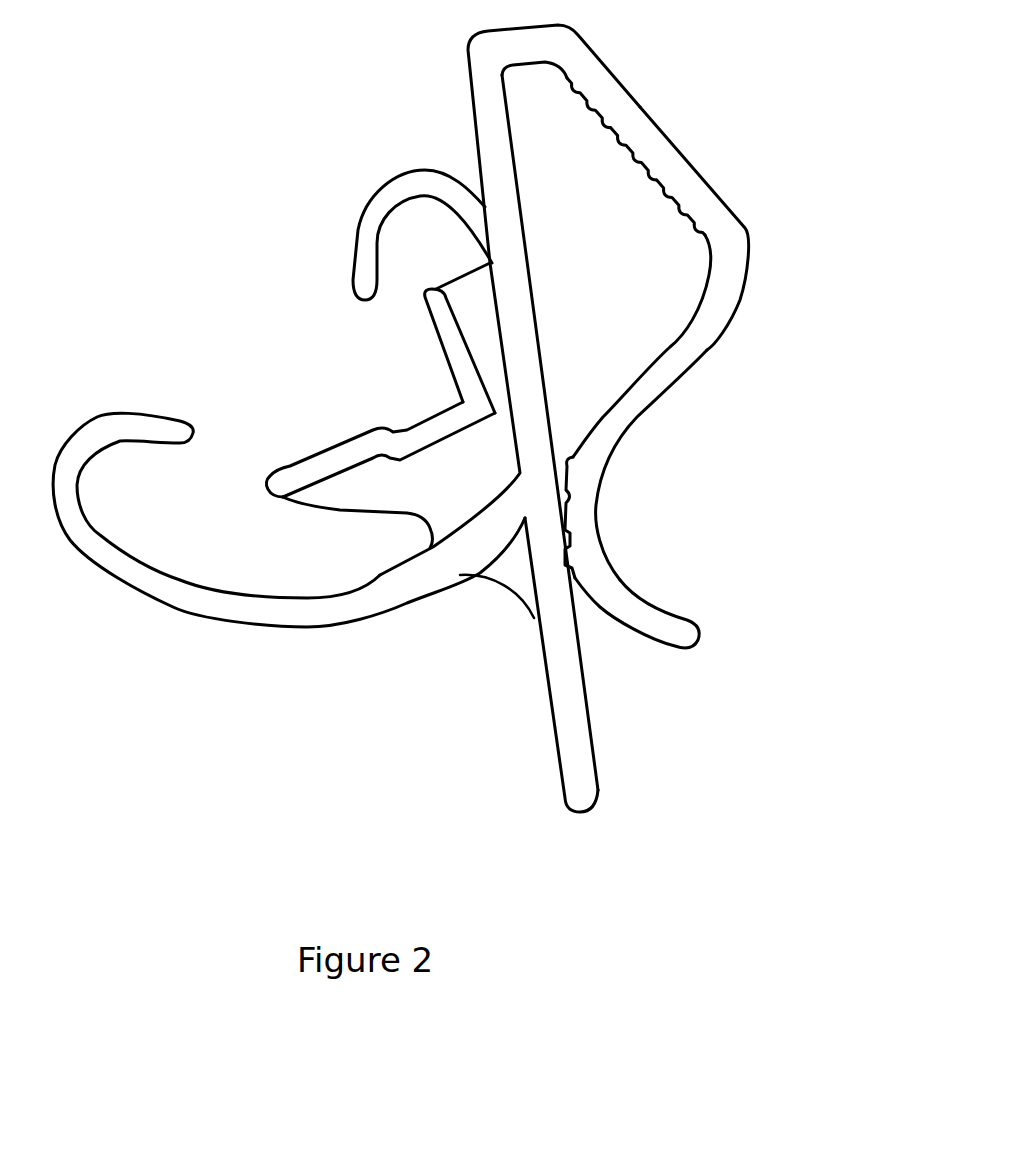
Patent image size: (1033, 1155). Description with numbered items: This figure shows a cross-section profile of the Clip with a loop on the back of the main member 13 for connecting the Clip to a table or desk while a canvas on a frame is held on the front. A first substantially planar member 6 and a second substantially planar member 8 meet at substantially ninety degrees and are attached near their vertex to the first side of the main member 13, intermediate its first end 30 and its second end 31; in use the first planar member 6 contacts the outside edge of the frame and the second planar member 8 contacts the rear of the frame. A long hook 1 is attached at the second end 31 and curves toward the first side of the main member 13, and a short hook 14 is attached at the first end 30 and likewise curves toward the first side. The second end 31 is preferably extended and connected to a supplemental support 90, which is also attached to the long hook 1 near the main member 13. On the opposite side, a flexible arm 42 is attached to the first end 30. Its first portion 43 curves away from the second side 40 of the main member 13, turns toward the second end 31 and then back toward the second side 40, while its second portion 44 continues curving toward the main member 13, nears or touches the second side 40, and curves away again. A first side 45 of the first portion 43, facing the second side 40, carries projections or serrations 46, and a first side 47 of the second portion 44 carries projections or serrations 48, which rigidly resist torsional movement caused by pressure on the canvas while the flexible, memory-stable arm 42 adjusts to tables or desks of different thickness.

The long hook 1 is at (130, 575).
The first substantially planar member 6 is at (452, 350).
The second substantially planar member 8 is at (353, 447).
The main member 13 is at (527, 357).
The hook 14 is at (380, 210).
The first end of the main member 30 is at (480, 92).
The second end of the main member 31 is at (552, 652).
The second side of the main member 40 is at (532, 290).
The flexible arm 42 is at (780, 293).
The first portion of the flexible arm 43 is at (597, 83).
The second portion of the flexible arm 44 is at (628, 420).
The first side of the first portion 45 is at (655, 172).
The projections or serrations 46 is at (601, 114).
The first side of the second portion 47 is at (570, 480).
The projections or serrations 48 is at (570, 462).
The supplemental support 90 is at (507, 575).